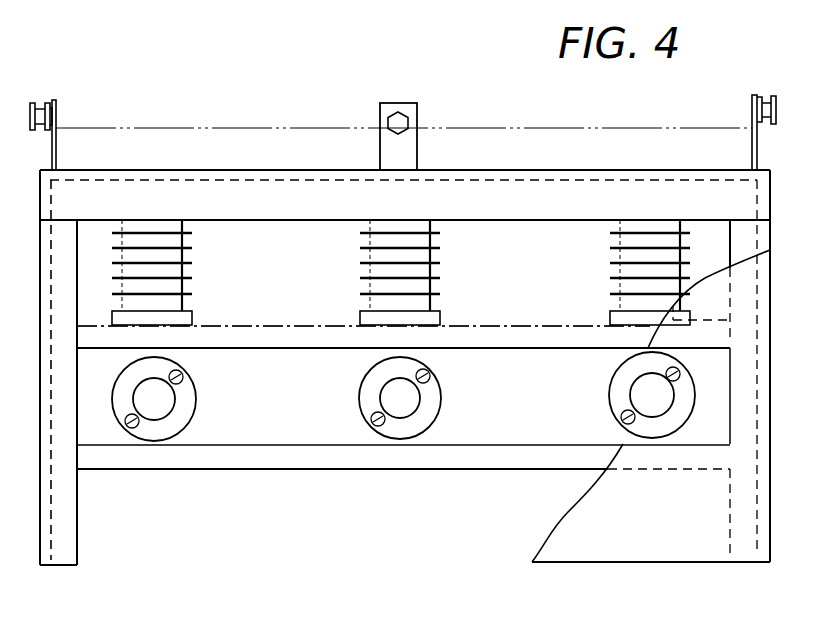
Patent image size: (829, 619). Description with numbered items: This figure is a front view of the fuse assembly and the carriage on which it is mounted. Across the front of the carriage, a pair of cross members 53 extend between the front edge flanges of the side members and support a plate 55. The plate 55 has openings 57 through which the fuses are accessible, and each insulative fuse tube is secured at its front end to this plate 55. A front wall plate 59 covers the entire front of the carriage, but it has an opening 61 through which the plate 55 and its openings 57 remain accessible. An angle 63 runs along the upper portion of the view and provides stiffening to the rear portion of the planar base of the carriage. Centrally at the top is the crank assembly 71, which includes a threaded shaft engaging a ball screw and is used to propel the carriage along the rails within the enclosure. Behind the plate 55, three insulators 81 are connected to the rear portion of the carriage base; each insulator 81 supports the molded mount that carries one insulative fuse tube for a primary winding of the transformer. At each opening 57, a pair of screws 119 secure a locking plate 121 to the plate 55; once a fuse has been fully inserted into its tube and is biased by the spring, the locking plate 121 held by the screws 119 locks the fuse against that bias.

The cross members 53 is at (293, 330).
The plate 55 is at (277, 432).
The openings 57 is at (196, 418).
The front wall plate 59 is at (630, 553).
The opening 61 is at (713, 348).
The angle 63 is at (218, 128).
The crank assembly 71 is at (380, 74).
The insulator 81 is at (185, 263).
The screws 119 is at (183, 376).
The locking plate 121 is at (152, 430).